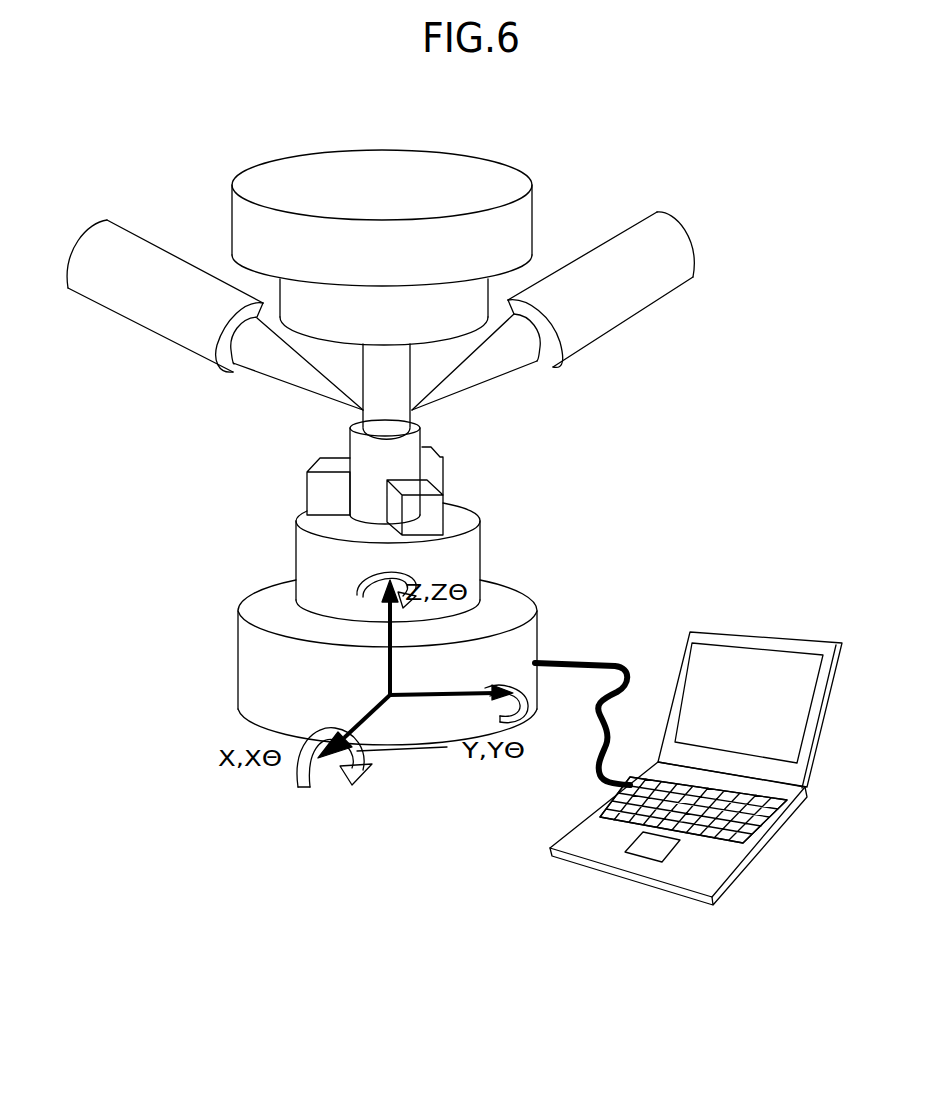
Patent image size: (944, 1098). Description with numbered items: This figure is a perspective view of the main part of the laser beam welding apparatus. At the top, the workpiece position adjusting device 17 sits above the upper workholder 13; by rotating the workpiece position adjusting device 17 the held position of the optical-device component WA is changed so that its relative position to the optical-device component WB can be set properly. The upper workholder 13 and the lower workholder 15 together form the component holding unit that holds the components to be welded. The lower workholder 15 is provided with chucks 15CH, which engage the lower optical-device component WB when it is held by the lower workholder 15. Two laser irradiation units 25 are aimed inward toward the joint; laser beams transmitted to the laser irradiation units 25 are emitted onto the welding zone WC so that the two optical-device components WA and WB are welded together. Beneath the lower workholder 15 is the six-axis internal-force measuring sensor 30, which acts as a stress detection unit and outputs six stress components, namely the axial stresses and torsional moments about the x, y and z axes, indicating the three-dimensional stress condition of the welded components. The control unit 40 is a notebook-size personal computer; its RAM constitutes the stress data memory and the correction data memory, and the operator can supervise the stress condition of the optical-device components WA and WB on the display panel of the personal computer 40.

The workpiece position adjusting device 17 is at (493, 173).
The upper workholder 13 is at (477, 298).
The laser irradiation unit 25 is at (128, 245).
The optical-device component WA is at (373, 362).
The optical-device component WB is at (360, 447).
The welding zone WC is at (413, 420).
The chucks 15CH is at (440, 518).
The lower workholder 15 is at (303, 522).
The 6-axis internal-force measuring sensor 30 is at (498, 595).
The control unit 40 is at (640, 883).